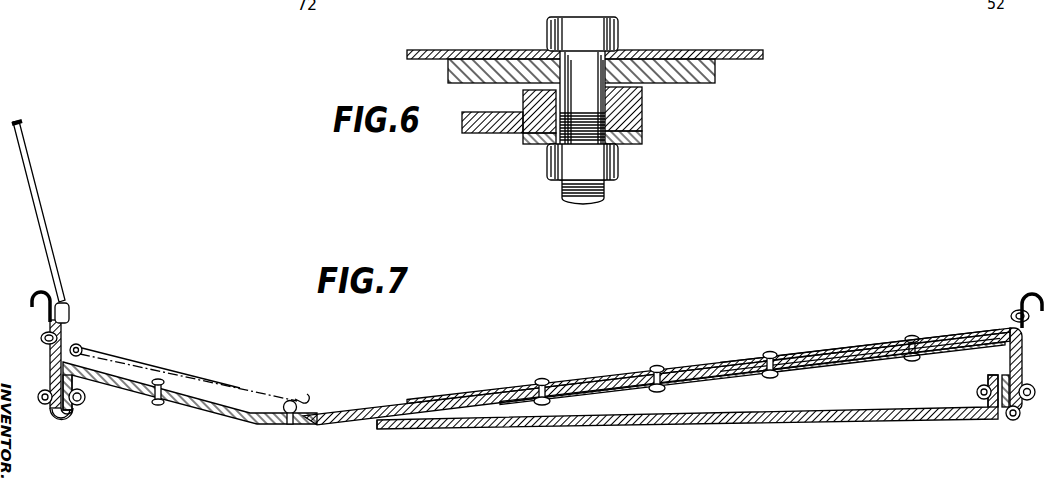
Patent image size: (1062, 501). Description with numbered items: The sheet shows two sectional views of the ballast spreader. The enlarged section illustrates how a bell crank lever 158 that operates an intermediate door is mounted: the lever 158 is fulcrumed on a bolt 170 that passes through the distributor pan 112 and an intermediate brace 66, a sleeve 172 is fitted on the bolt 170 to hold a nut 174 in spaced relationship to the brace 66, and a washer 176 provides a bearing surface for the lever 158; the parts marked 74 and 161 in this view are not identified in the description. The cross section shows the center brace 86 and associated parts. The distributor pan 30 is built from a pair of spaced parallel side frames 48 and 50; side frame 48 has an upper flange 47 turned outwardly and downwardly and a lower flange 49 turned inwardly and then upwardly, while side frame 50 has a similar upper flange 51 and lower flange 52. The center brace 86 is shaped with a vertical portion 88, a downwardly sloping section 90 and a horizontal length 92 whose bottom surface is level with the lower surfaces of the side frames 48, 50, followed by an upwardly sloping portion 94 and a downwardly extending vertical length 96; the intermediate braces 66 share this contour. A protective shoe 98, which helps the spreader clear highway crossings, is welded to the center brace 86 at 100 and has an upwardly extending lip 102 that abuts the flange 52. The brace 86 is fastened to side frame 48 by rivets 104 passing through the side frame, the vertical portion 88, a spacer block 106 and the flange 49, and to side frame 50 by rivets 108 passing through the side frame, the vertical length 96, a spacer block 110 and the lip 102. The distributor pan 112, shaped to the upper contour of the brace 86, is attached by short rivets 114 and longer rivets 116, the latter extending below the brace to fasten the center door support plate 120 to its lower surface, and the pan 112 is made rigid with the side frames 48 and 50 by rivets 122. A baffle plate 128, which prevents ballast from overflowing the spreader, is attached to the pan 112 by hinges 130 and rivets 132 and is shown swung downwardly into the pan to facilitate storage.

In FIG. 6, the bolt 170 is at (613, 35).
In FIG. 6, the distributor pan 112 is at (695, 51).
In FIG. 7, the distributor pan 112 is at (423, 398).
In FIG. 6, the spacer block 74 is at (716, 77).
In FIG. 6, the intermediate brace 66 is at (674, 95).
In FIG. 6, the bell crank lever 158 is at (649, 113).
In FIG. 6, the sleeve 172 is at (612, 144).
In FIG. 6, the nut 174 is at (604, 183).
In FIG. 6, the mounting plate 161 is at (486, 134).
In FIG. 6, the washer 176 is at (541, 145).
In FIG. 7, the baffle plate 128 is at (25, 149).
In FIG. 7, the upper flange 47 is at (36, 295).
In FIG. 7, the rivets 132 is at (64, 308).
In FIG. 7, the hinges 130 is at (77, 345).
In FIG. 7, the rivets 122 is at (43, 332).
In FIG. 7, the side frame 48 is at (47, 348).
In FIG. 7, the vertical portion 88 is at (50, 381).
In FIG. 7, the rivets 104 is at (85, 399).
In FIG. 7, the spacer block 106 is at (66, 421).
In FIG. 7, the lower flange 49 is at (74, 413).
In FIG. 7, the short rivets 114 is at (156, 403).
In FIG. 7, the downwardly sloping section 90 is at (203, 411).
In FIG. 7, the horizontal length 92 is at (277, 426).
In FIG. 7, the center brace 86 is at (323, 428).
In FIG. 7, the weld 100 is at (373, 427).
In FIG. 7, the longer rivets 116 is at (653, 364).
In FIG. 7, the protective shoe 98 is at (670, 424).
In FIG. 7, the center door support plate 120 is at (690, 386).
In FIG. 7, the distributor pan 30 is at (835, 334).
In FIG. 7, the upwardly sloping portion 94 is at (844, 361).
In FIG. 7, the upper flange 51 is at (1045, 300).
In FIG. 7, the vertical length 96 is at (1024, 362).
In FIG. 7, the spacer block 110 is at (1006, 375).
In FIG. 7, the side frame 50 is at (1028, 384).
In FIG. 7, the lip 102 is at (990, 378).
In FIG. 7, the rivets 108 is at (976, 395).
In FIG. 7, the lower flange 52 is at (1010, 421).